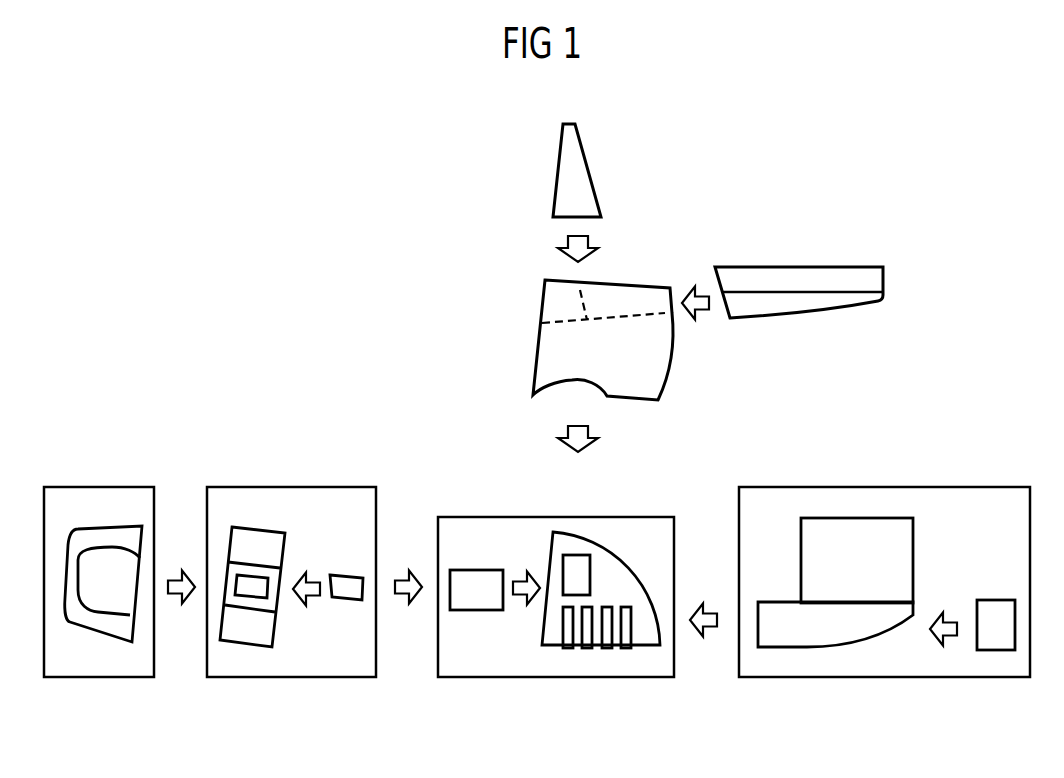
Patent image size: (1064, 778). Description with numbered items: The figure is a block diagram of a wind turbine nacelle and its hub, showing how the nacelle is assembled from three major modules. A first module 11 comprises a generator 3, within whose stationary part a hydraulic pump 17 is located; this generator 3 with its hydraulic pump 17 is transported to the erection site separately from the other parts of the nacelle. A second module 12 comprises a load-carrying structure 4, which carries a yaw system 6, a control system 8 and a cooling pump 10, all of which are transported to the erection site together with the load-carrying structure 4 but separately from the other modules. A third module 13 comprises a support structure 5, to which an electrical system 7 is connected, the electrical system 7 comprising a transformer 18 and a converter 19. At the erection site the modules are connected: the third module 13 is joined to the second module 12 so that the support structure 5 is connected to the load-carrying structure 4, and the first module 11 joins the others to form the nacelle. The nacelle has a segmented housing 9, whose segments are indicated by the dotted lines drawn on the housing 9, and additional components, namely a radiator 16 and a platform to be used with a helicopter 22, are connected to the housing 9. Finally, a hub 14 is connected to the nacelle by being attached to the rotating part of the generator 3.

The generator 3 is at (255, 527).
The load-carrying structure 4 is at (549, 546).
The support structure 5 is at (787, 650).
The yaw system 6 is at (568, 648).
The electrical system 7 is at (908, 582).
The control system 8 is at (473, 568).
The housing 9 is at (542, 323).
The cooling pump 10 is at (580, 555).
The first module 11 is at (290, 678).
The second module 12 is at (527, 678).
The third module 13 is at (867, 678).
The hub 14 is at (98, 487).
The radiator 16 is at (593, 173).
The hydraulic pump 17 is at (343, 575).
The transformer 18 is at (997, 652).
The converter 19 is at (845, 518).
The platform to be used with a helicopter 22 is at (798, 263).